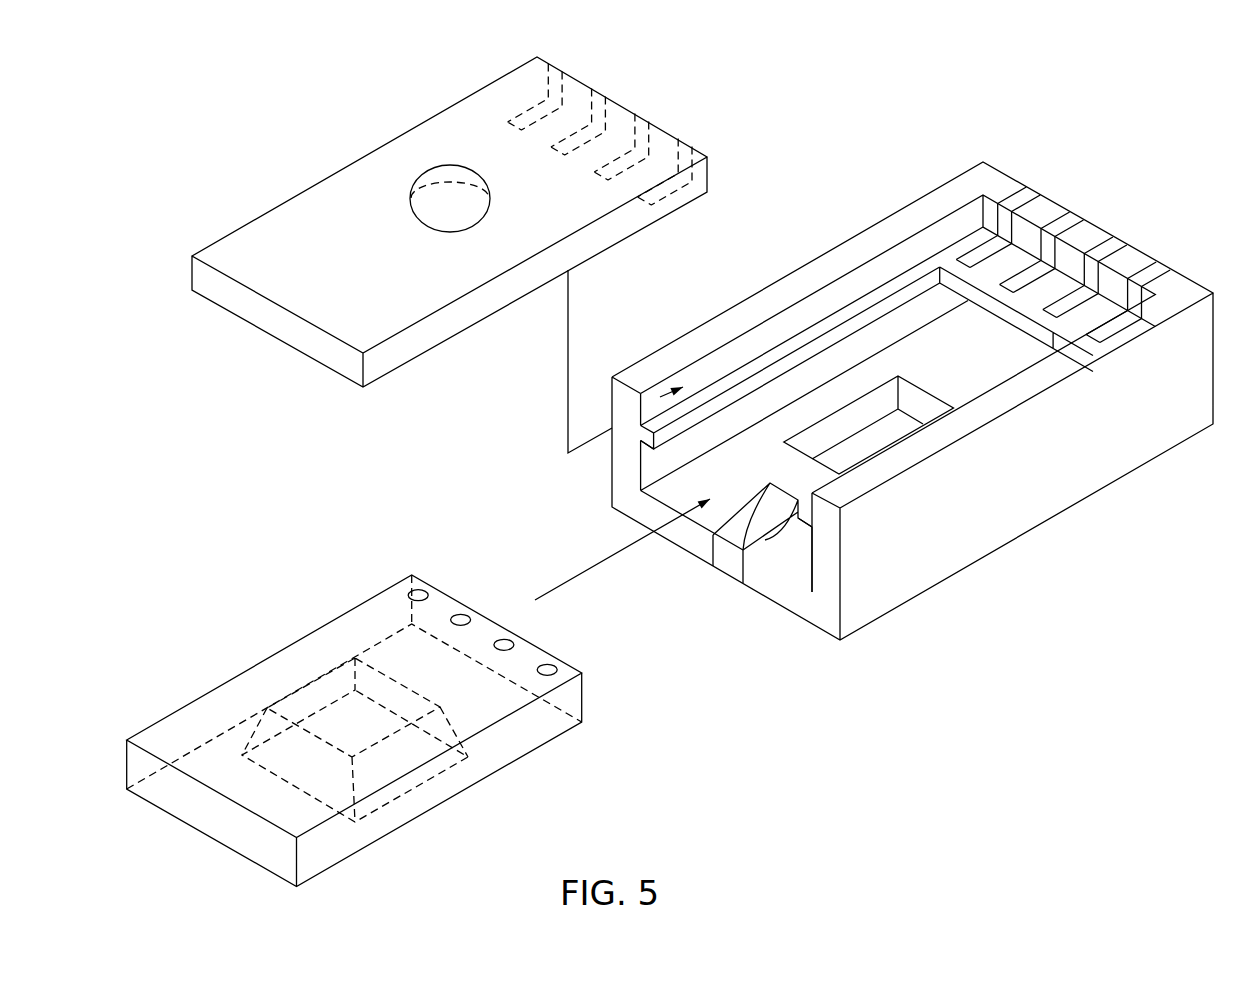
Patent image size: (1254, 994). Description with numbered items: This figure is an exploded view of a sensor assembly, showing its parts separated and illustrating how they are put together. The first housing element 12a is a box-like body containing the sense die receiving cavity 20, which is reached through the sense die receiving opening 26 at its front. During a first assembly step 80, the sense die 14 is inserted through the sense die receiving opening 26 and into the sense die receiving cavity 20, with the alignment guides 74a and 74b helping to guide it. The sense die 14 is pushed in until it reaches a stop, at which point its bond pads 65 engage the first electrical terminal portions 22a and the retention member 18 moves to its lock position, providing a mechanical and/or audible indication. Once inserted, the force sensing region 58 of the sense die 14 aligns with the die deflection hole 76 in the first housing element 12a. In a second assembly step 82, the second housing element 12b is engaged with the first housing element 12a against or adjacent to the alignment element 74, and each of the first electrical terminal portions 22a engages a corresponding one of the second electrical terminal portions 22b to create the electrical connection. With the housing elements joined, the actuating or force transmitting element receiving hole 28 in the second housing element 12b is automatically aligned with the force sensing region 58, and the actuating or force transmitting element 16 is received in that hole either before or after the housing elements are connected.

The first housing element 12a is at (1030, 545).
The second housing element 12b is at (268, 210).
The sense die 14 is at (440, 808).
The actuating or force transmitting element 16 is at (452, 180).
The retention member 18 is at (722, 566).
The sense die receiving cavity 20 is at (766, 442).
The first electrical terminal portions 22a is at (1027, 195).
The second electrical terminal portions 22b is at (557, 75).
The sense die receiving opening 26 is at (803, 568).
The actuating or force transmitting element receiving hole 28 is at (408, 203).
The force sensing region 58 is at (302, 692).
The bond pads 65 is at (420, 590).
The alignment element 74 is at (810, 527).
The alignment guide 74a is at (641, 443).
The alignment guide 74b is at (723, 392).
The die deflection hole 76 is at (884, 386).
The first assembly step 80 is at (608, 558).
The second assembly step 82 is at (568, 358).